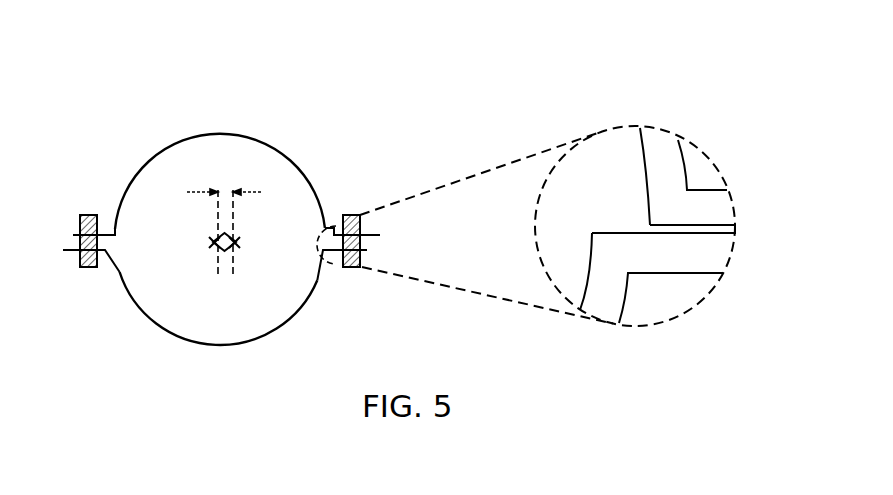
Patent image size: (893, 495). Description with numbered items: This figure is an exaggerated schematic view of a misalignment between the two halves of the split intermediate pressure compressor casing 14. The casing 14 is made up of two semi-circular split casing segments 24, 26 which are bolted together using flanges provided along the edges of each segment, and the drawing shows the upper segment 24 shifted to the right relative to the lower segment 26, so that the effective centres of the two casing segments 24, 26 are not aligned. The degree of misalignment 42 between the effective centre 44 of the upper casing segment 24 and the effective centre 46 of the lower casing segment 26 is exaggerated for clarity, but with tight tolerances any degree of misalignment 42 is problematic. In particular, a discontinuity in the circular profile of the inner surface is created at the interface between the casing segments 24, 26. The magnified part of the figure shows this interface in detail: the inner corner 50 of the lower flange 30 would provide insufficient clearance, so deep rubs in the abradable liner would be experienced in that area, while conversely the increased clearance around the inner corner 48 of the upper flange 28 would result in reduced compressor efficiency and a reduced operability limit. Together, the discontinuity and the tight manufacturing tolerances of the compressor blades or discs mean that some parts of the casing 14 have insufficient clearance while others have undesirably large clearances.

The intermediate pressure compressor casing 14 is at (177, 105).
The upper casing segment 24 is at (253, 137).
The lower casing segment 26 is at (290, 318).
The upper flange 28 is at (722, 210).
The lower flange 30 is at (712, 247).
The degree of misalignment 42 is at (228, 190).
The effective centre of the upper casing segment 44 is at (238, 243).
The effective centre of the lower casing segment 46 is at (212, 240).
The inner corner of the upper flange 48 is at (642, 225).
The inner corner of the lower flange 50 is at (592, 234).